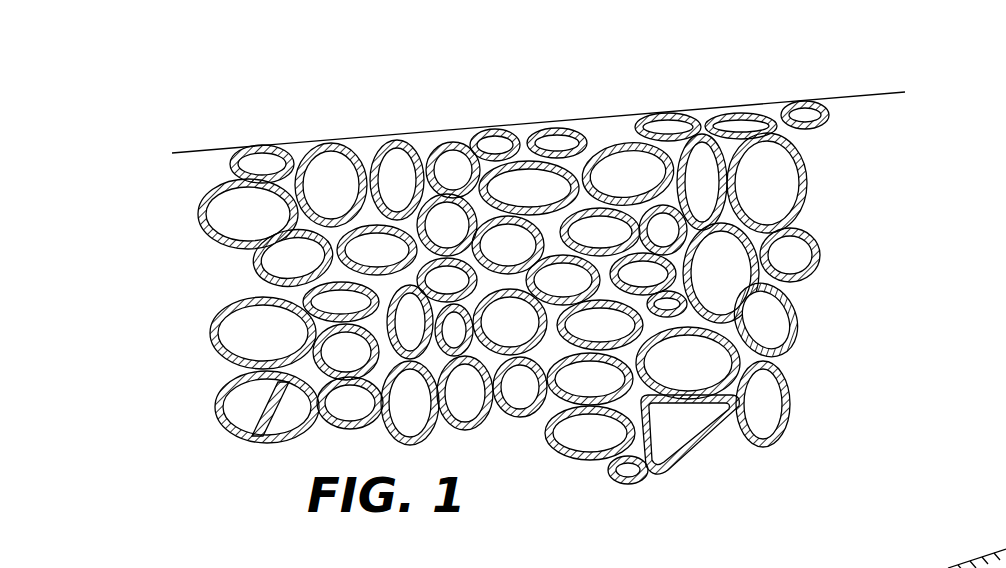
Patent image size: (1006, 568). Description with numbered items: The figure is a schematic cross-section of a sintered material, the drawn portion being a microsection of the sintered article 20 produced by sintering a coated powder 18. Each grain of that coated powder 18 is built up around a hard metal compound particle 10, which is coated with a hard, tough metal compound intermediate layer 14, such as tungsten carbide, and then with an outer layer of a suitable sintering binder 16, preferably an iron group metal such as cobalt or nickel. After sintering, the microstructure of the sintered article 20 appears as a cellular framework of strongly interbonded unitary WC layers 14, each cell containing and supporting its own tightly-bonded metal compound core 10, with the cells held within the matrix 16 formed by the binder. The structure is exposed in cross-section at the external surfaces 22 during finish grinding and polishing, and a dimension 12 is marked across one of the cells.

The hard metal compound particles 10 is at (523, 330).
The cell wall thickness 12 is at (733, 370).
The hard, tough metal compound intermediate layer 14 is at (400, 268).
The sintering binder 16 is at (765, 233).
The coated powder 18 is at (797, 358).
The sintered article 20 is at (198, 177).
The external surfaces 22 is at (864, 85).